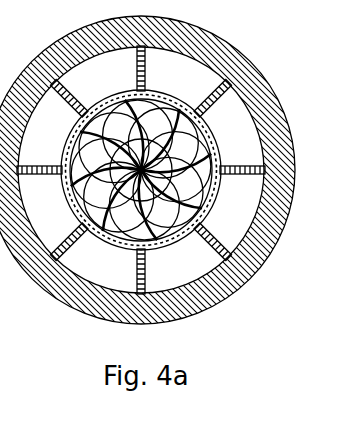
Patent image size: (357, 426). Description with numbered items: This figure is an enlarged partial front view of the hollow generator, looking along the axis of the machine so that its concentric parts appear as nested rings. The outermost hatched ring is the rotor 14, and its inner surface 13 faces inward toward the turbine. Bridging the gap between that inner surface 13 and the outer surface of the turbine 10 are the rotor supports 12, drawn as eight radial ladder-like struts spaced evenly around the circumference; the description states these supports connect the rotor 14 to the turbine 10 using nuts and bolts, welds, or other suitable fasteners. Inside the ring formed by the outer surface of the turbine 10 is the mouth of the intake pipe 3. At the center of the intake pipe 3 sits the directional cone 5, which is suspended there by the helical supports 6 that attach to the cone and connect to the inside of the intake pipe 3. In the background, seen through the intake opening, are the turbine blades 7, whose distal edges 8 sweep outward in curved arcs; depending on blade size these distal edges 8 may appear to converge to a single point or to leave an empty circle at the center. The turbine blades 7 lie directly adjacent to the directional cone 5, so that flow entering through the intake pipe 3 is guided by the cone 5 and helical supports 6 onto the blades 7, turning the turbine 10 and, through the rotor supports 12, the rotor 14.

The rotor 14 is at (155, 42).
The inner surface of the rotor 13 is at (91, 51).
The rotor supports 12 is at (147, 84).
The outer surface of the turbine 10 is at (67, 149).
The directional cone 5 is at (152, 156).
The intake pipe 3 is at (124, 143).
The helical supports 6 is at (143, 177).
The distal edges of the turbine blades 8 is at (197, 142).
The turbine blades 7 is at (124, 225).